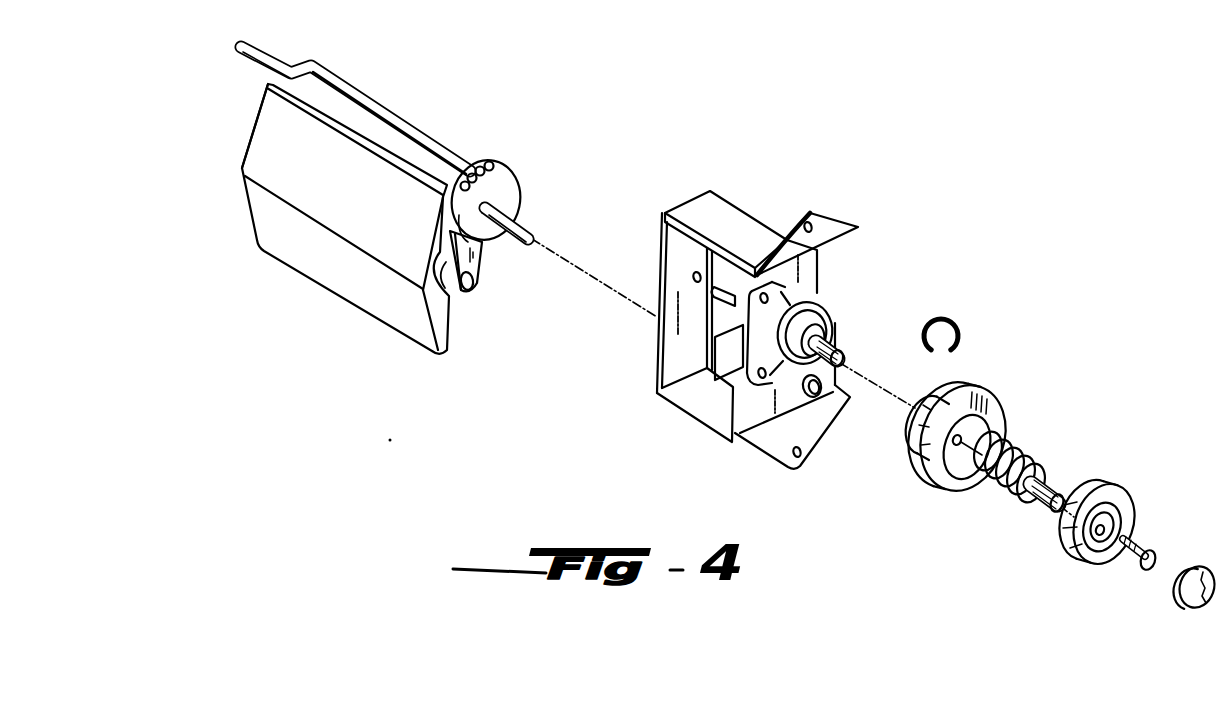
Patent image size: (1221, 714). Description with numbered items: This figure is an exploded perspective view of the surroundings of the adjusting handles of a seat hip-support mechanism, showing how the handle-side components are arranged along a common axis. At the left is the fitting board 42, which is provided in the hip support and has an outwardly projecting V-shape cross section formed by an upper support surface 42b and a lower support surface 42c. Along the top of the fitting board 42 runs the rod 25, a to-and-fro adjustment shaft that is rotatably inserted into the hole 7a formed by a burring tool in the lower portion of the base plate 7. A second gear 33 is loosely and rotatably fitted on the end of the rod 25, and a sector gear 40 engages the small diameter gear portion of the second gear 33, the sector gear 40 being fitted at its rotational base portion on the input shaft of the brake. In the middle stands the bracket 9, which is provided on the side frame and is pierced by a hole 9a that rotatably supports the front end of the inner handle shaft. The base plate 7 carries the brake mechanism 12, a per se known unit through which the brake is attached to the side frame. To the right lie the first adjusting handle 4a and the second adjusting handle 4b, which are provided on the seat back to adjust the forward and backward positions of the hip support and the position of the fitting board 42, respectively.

The rod 25 is at (370, 97).
The fitting board 42 is at (341, 312).
The upper support surface 42b is at (258, 130).
The lower support surface 42c is at (303, 270).
The second gear 33 is at (487, 163).
The sector gear 40 is at (483, 267).
The bracket 9 is at (738, 213).
The hole 9a is at (691, 276).
The base plate 7 is at (847, 222).
The hole 7a is at (816, 394).
The brake mechanism 12 is at (830, 298).
The first adjusting handle 4a is at (982, 382).
The second adjusting handle 4b is at (1110, 488).